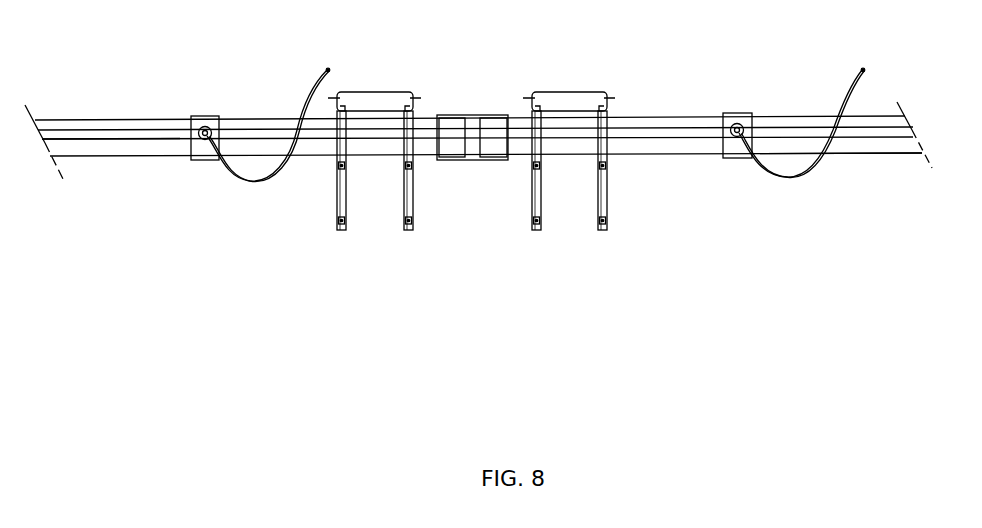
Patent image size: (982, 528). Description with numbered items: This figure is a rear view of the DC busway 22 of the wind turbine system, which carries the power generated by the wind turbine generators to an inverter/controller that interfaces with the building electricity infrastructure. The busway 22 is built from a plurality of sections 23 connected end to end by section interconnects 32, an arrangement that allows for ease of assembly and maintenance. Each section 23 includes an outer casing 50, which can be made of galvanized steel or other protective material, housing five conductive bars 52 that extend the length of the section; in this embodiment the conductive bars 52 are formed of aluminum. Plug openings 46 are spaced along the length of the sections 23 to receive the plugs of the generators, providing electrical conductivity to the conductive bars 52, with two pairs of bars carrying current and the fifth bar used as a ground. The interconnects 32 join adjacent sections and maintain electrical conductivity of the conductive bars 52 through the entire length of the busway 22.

The DC busway 22 is at (483, 203).
The sections 23 is at (283, 120).
The section interconnects 32 is at (472, 115).
The plug openings 46 is at (188, 150).
The outer casing 50 is at (853, 155).
The conductive bars 52 is at (80, 142).